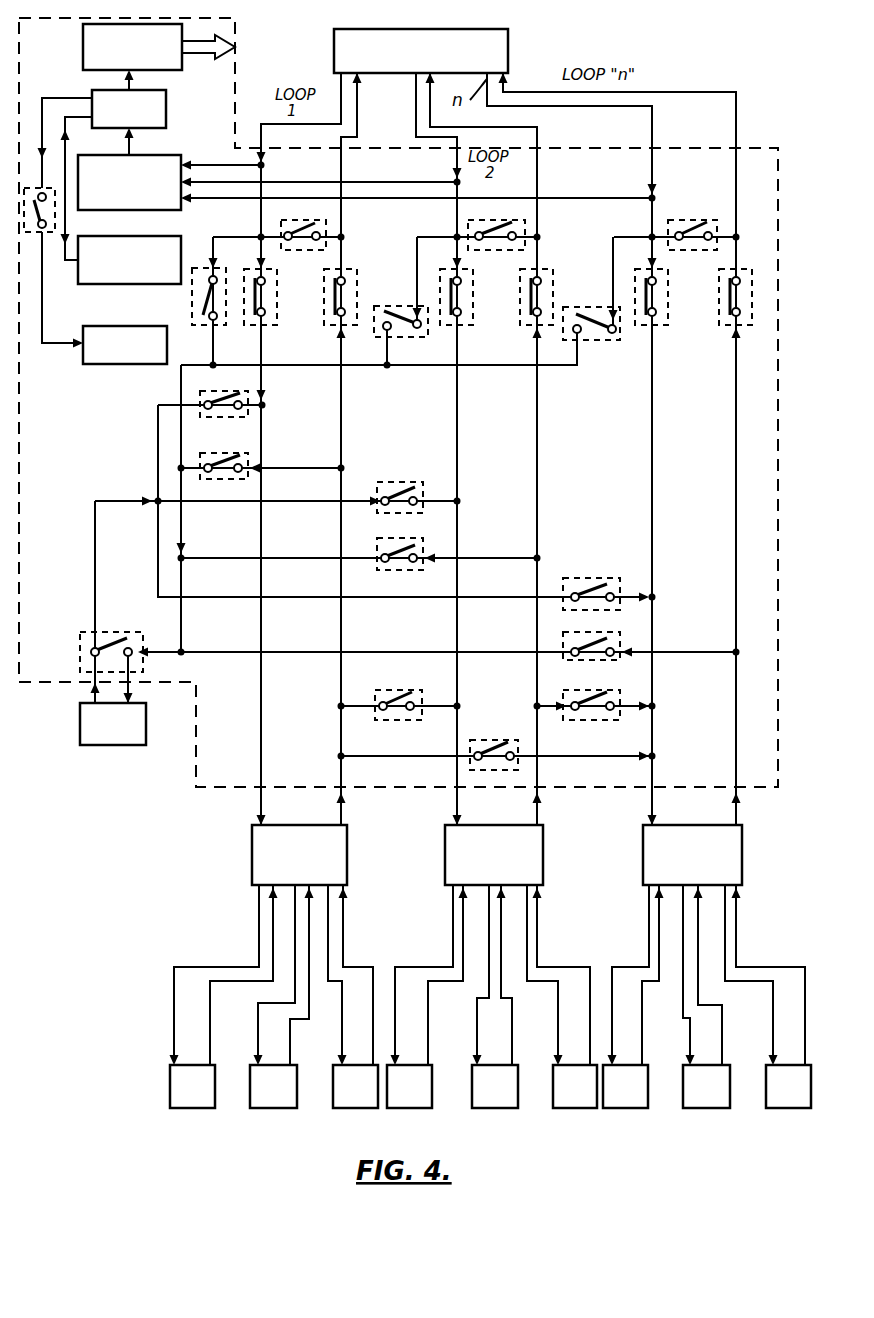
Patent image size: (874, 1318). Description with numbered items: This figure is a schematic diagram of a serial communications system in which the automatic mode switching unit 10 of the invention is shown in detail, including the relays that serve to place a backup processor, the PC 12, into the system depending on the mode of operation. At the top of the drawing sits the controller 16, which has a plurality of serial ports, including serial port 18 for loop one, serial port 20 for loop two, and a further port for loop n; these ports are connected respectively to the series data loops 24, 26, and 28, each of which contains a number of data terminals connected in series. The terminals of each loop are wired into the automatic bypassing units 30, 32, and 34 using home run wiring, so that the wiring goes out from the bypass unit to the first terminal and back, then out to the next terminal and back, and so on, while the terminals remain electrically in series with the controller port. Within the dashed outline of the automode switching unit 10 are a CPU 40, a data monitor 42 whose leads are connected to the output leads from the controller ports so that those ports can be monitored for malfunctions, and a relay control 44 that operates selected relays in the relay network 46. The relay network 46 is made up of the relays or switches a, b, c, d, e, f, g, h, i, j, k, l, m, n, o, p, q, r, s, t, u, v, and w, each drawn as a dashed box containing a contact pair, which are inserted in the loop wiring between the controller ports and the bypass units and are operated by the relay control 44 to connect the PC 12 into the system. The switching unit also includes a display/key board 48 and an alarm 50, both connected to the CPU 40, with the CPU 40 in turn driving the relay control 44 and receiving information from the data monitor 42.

The automatic mode switching unit 10 is at (758, 146).
The PC 12 is at (100, 752).
The controller 16 is at (514, 45).
The serial port 18 is at (341, 84).
The serial port 20 is at (416, 78).
The series data loop 24 is at (176, 929).
The series data loop 26 is at (435, 925).
The series data loop 28 is at (620, 924).
The automatic bypassing unit 30 is at (252, 851).
The automatic bypassing unit 32 is at (543, 852).
The automatic bypassing unit 34 is at (743, 851).
The CPU 40 is at (172, 108).
The data monitor 42 is at (170, 155).
The relay control 44 is at (83, 50).
The relay network 46 is at (126, 449).
The display/key board 48 is at (98, 286).
The alarm 50 is at (107, 366).
The relay a is at (36, 226).
The relay b is at (308, 246).
The relay c is at (521, 227).
The relay d is at (686, 216).
The relay e is at (195, 292).
The relay f is at (279, 291).
The relay g is at (357, 284).
The relay h is at (474, 290).
The relay i is at (554, 290).
The relay j is at (669, 290).
The relay k is at (752, 292).
The relay l is at (389, 337).
The relay m is at (589, 340).
The relay n is at (219, 414).
The relay o is at (219, 476).
The relay p is at (394, 481).
The relay q is at (394, 571).
The relay r is at (584, 584).
The relay s is at (111, 632).
The relay t is at (616, 636).
The relay u is at (394, 690).
The relay v is at (587, 722).
The relay w is at (491, 740).